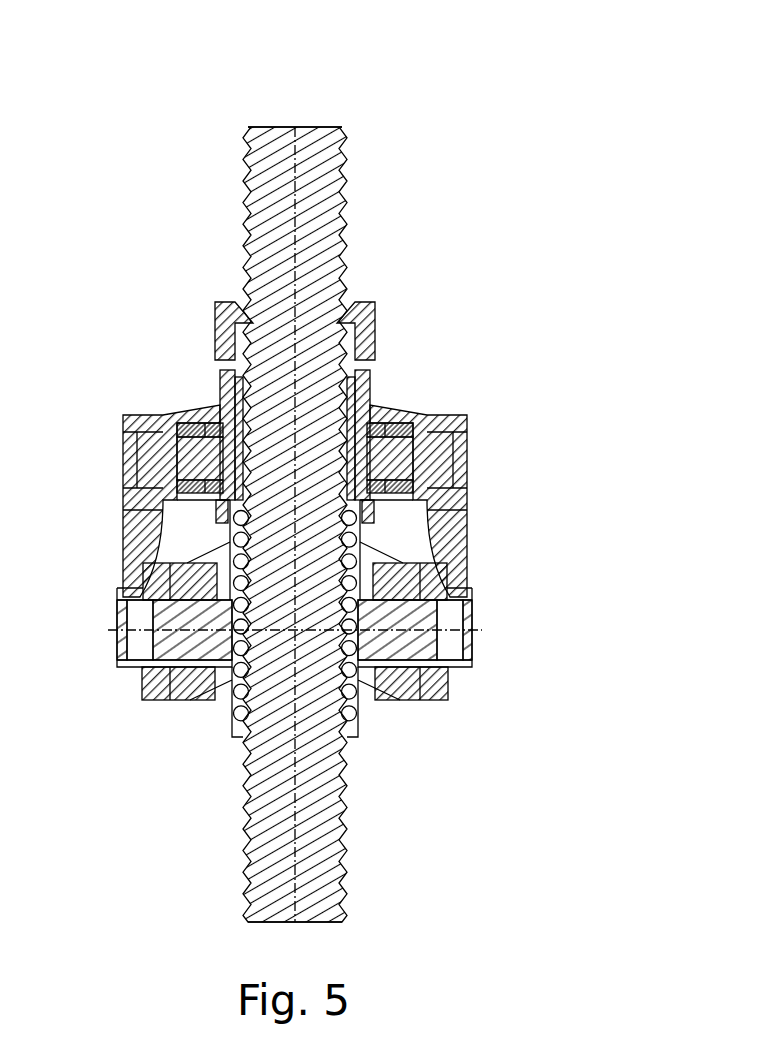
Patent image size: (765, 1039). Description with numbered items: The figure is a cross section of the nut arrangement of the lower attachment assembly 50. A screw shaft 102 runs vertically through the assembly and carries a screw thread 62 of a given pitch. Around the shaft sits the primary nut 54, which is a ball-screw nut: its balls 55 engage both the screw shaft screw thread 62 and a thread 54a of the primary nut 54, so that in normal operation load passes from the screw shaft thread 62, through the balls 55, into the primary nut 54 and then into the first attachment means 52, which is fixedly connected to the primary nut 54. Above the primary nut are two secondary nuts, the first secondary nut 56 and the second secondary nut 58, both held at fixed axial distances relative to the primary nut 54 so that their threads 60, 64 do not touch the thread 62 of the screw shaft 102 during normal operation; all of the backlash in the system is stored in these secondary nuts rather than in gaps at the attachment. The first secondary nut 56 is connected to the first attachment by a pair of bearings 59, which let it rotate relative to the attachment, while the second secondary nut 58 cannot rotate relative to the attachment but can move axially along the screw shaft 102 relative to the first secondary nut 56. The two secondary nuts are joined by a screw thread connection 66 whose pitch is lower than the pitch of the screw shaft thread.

The lower attachment assembly 50 is at (466, 140).
The screw shaft 102 is at (313, 130).
The screw thread 62 is at (346, 212).
The thread 64 is at (377, 306).
The screw thread connection 66 is at (220, 395).
The second secondary nut 58 is at (366, 342).
The bearings 59 is at (175, 458).
The thread 60 is at (348, 440).
The first secondary nut 56 is at (392, 453).
The first attachment means 52 is at (453, 540).
The primary nut 54 is at (400, 627).
The balls 55 is at (233, 690).
The thread 54a is at (357, 700).